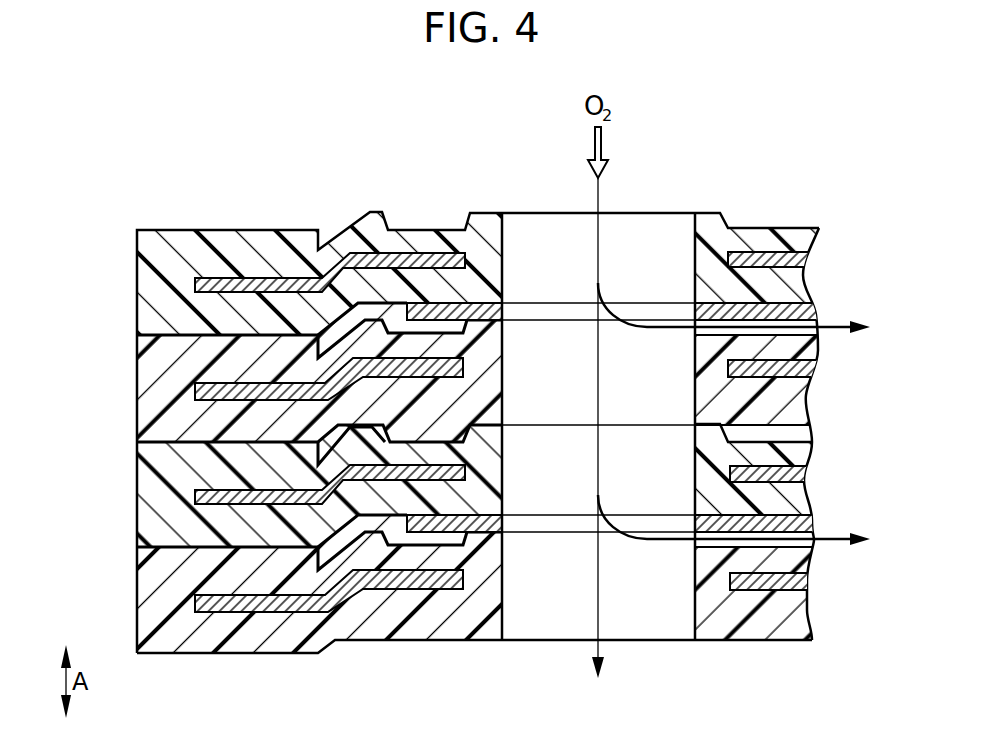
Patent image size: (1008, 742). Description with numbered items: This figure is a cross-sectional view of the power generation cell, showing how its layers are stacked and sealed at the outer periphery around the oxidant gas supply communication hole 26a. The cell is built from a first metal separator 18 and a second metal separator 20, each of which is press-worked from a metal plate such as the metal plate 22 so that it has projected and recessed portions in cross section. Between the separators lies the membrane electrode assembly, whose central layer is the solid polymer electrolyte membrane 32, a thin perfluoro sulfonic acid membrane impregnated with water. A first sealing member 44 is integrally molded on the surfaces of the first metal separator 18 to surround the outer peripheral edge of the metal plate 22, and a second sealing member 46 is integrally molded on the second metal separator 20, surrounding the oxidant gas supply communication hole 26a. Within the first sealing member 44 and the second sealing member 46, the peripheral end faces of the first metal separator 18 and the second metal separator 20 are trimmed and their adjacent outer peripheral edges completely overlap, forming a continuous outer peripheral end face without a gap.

The first sealing member 44 is at (128, 239).
The second sealing member 46 is at (128, 365).
The first metal separator 18 is at (829, 232).
The second metal separator 20 is at (820, 387).
The metal plate 22 is at (818, 311).
The solid polymer electrolyte membrane 32 is at (816, 523).
The oxidant gas supply communication hole 26a is at (530, 222).